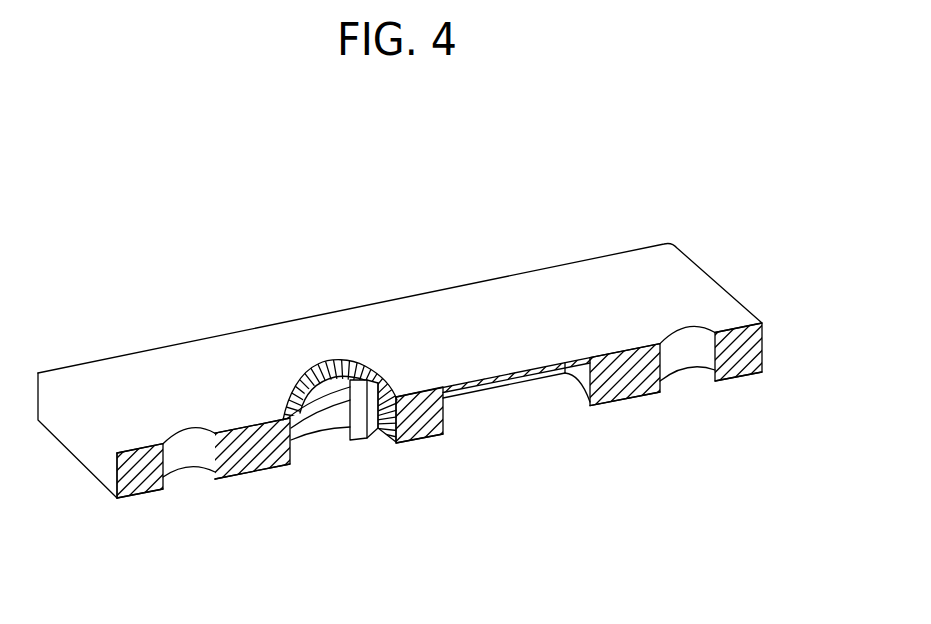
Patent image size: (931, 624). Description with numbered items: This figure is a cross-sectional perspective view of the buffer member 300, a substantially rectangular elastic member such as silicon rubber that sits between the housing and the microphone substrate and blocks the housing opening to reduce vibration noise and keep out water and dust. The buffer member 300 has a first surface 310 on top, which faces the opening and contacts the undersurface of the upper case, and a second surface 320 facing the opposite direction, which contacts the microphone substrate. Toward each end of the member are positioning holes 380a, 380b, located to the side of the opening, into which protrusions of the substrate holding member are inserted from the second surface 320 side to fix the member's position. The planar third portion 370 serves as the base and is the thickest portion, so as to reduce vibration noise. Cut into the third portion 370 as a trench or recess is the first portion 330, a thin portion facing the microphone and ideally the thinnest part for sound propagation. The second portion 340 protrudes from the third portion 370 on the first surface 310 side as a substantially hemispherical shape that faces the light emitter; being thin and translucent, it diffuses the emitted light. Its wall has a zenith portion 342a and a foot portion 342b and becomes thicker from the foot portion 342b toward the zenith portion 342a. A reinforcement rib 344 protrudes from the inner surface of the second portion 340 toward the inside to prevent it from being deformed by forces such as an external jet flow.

The buffer member 300 is at (178, 232).
The first surface 310 is at (645, 259).
The second surface 320 is at (743, 375).
The first portion 330 is at (563, 377).
The second portion 340 is at (438, 222).
The zenith portion 342a is at (342, 362).
The foot portion 342b is at (396, 398).
The reinforcement rib 344 is at (357, 447).
The third portion 370 is at (138, 487).
The positioning hole 380a is at (198, 457).
The positioning hole 380b is at (690, 367).